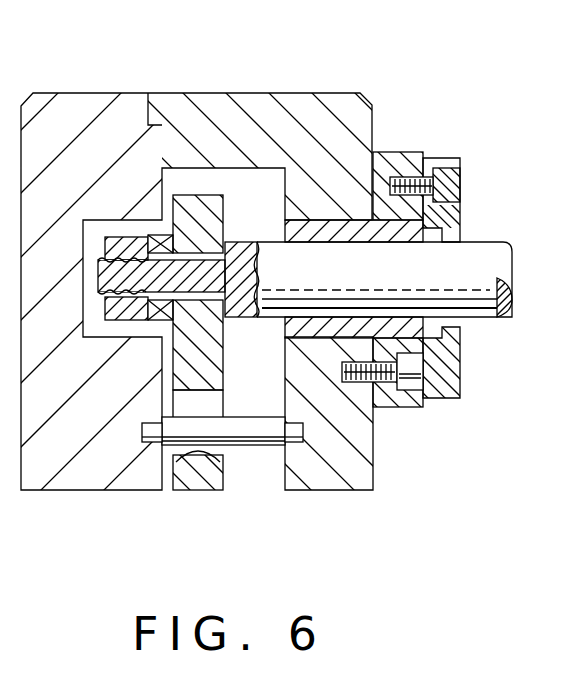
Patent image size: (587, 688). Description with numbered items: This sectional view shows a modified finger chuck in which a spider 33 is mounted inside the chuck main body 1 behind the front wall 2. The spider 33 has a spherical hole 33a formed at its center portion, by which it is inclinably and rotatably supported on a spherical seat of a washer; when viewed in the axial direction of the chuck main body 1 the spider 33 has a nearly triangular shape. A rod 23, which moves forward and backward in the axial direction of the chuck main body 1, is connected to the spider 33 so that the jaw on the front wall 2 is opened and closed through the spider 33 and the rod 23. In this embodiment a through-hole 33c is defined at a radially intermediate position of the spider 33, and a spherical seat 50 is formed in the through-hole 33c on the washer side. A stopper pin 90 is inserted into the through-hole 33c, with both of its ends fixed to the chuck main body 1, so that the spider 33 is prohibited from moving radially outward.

The chuck main body 1 is at (248, 82).
The front wall 2 is at (328, 478).
The rod 23 is at (491, 242).
The spider 33 is at (203, 342).
The spherical hole 33a is at (222, 258).
The through-hole 33c is at (213, 409).
The spherical seat 50 is at (174, 455).
The stopper pin 90 is at (252, 453).